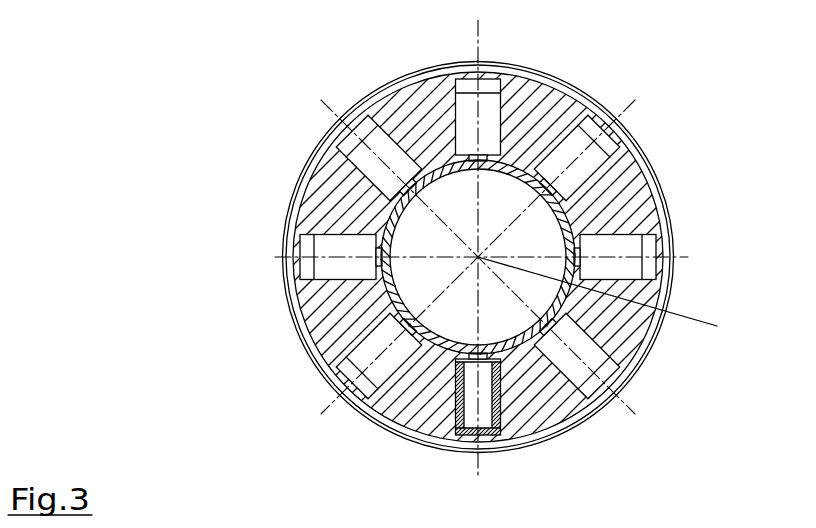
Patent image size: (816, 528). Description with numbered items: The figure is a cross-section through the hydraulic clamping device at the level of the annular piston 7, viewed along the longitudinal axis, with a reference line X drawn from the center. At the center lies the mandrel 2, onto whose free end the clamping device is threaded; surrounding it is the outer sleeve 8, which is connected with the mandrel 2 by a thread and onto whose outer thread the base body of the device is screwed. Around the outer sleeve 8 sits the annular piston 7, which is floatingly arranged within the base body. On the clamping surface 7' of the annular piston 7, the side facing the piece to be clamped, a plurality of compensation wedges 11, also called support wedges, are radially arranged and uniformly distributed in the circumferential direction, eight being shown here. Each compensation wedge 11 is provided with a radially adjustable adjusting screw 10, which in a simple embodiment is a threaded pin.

The mandrel 2 is at (528, 240).
The annular piston 7 is at (421, 292).
The clamping surface 7' is at (439, 257).
The outer sleeve 8 is at (398, 214).
The adjusting screw 10 is at (483, 397).
The compensation wedges 11 is at (458, 408).
The reference axis X is at (611, 305).